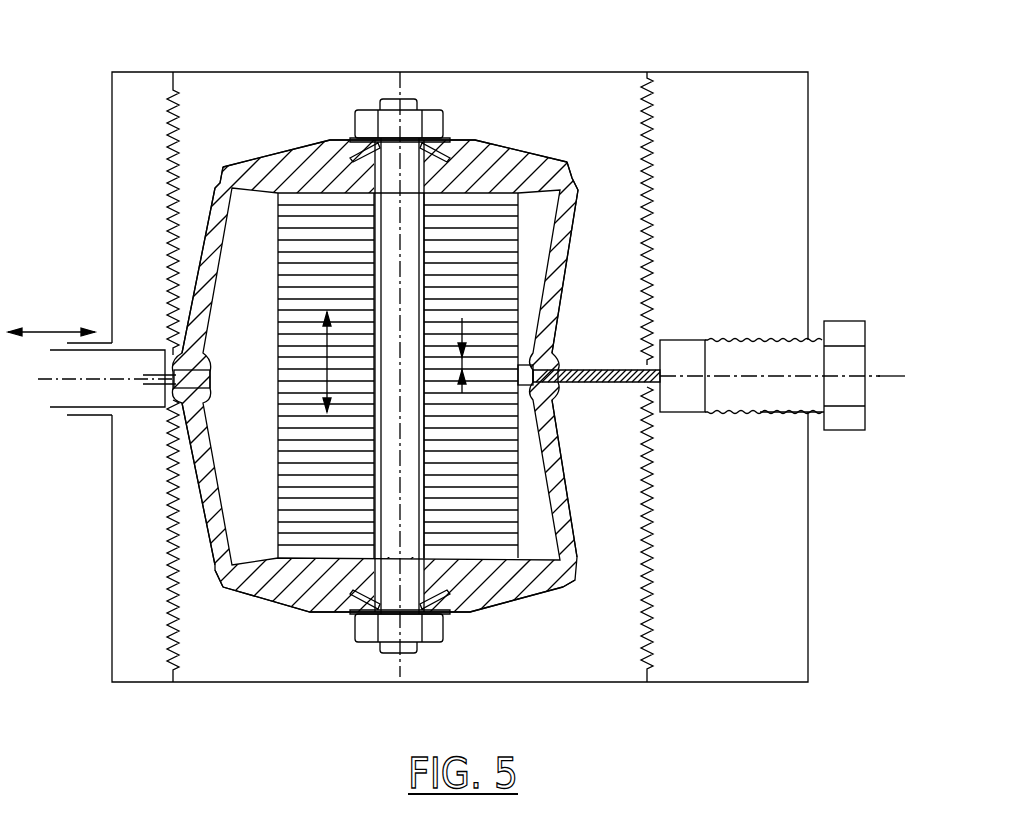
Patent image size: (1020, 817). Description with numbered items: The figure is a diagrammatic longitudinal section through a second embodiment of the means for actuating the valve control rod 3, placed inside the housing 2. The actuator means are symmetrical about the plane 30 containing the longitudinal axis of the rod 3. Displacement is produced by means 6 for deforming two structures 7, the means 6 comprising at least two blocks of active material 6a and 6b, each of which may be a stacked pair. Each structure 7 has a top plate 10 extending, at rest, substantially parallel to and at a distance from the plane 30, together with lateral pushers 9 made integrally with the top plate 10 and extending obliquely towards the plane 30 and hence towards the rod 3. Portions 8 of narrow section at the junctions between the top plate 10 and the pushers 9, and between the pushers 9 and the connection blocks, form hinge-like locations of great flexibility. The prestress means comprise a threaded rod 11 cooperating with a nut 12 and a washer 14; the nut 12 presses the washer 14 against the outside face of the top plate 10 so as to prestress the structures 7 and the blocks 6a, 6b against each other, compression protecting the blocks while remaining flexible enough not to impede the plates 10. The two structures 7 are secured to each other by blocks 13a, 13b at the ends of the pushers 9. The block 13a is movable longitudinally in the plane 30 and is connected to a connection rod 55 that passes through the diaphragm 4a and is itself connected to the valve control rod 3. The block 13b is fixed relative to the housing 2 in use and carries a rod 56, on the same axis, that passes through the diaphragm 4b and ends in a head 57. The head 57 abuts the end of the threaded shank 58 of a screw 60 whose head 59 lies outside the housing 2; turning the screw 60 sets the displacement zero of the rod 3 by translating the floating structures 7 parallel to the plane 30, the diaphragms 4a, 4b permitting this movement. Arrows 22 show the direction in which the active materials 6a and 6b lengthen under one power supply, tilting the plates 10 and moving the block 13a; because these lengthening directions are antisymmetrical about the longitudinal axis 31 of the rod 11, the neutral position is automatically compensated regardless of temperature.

The housing 2 is at (112, 193).
The valve control rod 3 is at (92, 393).
The diaphragm 4a is at (158, 127).
The diaphragm 4b is at (652, 142).
The structure 7 is at (298, 142).
The top plate 10 is at (498, 163).
The lateral pusher 9 is at (560, 300).
The portion of narrow section 8 is at (573, 178).
The means for deforming the structures 6 is at (425, 375).
The block of active material 6a is at (298, 276).
The block of active material 6b is at (480, 275).
The threaded rod 11 is at (385, 505).
The longitudinal axis 31 is at (398, 95).
The nut 12 is at (432, 123).
The washer 14 is at (458, 137).
The arrows 22 is at (327, 362).
The connection rod 55 is at (157, 378).
The block 13a is at (200, 395).
The block 13b is at (548, 390).
The rod 56 is at (615, 368).
The head 57 is at (685, 350).
The threaded shank 58 is at (757, 362).
The head of the screw 59 is at (848, 335).
The screw 60 is at (788, 395).
The plane 30 is at (895, 375).